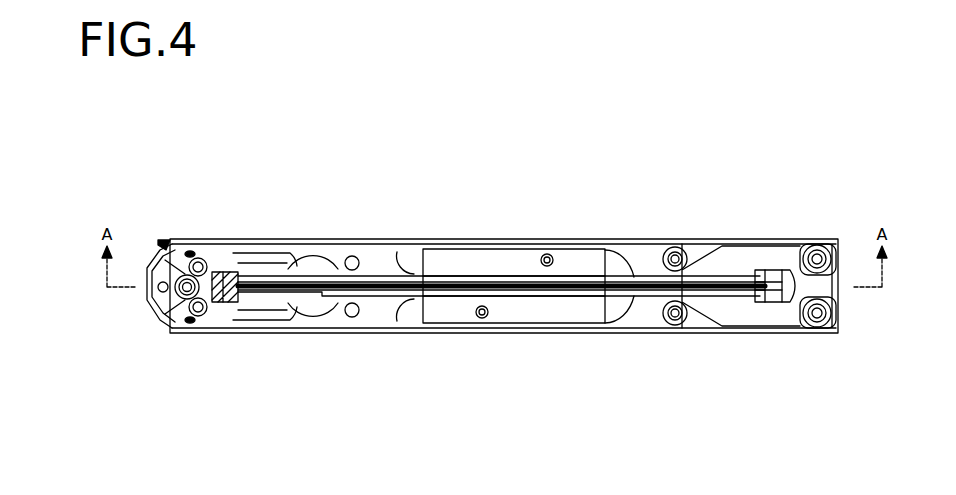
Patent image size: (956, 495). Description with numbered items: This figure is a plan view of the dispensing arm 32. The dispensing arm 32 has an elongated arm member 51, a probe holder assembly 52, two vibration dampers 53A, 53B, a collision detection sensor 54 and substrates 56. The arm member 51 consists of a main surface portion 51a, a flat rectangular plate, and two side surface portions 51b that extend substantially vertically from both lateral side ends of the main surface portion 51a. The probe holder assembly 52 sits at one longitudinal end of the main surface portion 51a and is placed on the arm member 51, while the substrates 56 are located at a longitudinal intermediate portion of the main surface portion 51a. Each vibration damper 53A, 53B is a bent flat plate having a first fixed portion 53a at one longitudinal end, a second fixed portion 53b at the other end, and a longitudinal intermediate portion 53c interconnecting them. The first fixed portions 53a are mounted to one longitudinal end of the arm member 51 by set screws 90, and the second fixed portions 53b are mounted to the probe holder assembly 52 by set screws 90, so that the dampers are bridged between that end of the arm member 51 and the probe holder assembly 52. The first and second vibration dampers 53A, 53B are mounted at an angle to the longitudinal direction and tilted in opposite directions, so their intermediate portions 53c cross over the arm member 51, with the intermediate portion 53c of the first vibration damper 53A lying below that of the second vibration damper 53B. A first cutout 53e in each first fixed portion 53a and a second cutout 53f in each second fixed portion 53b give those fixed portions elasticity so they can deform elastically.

The dispensing arm 32 is at (526, 162).
The arm member 51 is at (480, 334).
The main surface portion 51a is at (610, 334).
The side surface portion 51b is at (578, 248).
The probe holder assembly 52 is at (160, 240).
The first vibration damper 53A is at (442, 334).
The second vibration damper 53B is at (460, 247).
The first fixed portion 53a is at (790, 240).
The second fixed portion 53b is at (214, 258).
The longitudinal intermediate portion 53c is at (411, 248).
The first cutout 53e is at (775, 240).
The second cutout 53f is at (240, 270).
The collision detection sensor 54 is at (211, 334).
The substrate 56 is at (569, 334).
The set screw 90 is at (205, 250).